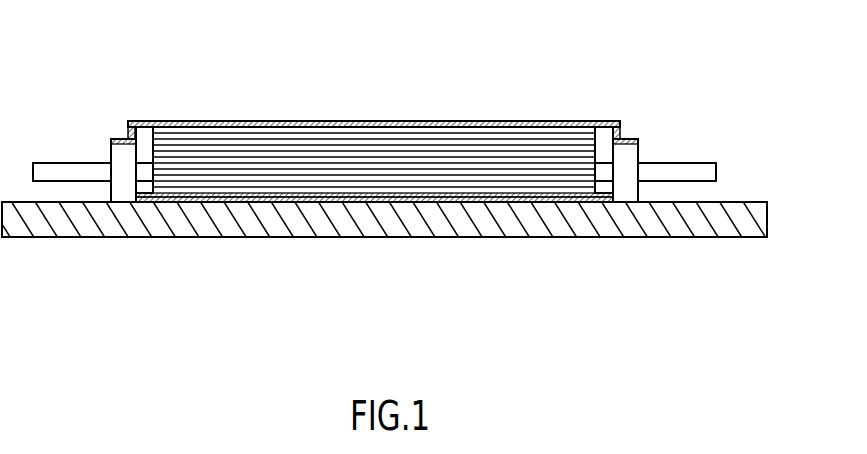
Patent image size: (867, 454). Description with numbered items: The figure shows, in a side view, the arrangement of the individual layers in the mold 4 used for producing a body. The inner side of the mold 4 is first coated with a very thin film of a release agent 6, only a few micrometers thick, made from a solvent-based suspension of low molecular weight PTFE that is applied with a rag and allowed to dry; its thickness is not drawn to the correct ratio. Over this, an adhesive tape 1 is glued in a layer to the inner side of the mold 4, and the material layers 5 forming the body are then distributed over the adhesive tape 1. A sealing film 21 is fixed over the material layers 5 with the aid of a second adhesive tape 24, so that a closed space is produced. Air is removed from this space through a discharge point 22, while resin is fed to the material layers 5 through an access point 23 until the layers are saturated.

The adhesive tape 1 is at (505, 205).
The mold 4 is at (632, 223).
The material layers 5 is at (494, 152).
The release agent 6 is at (186, 197).
The sealing film 21 is at (597, 150).
The discharge point 22 is at (668, 172).
The access point 23 is at (79, 171).
The second adhesive tape 24 is at (122, 179).